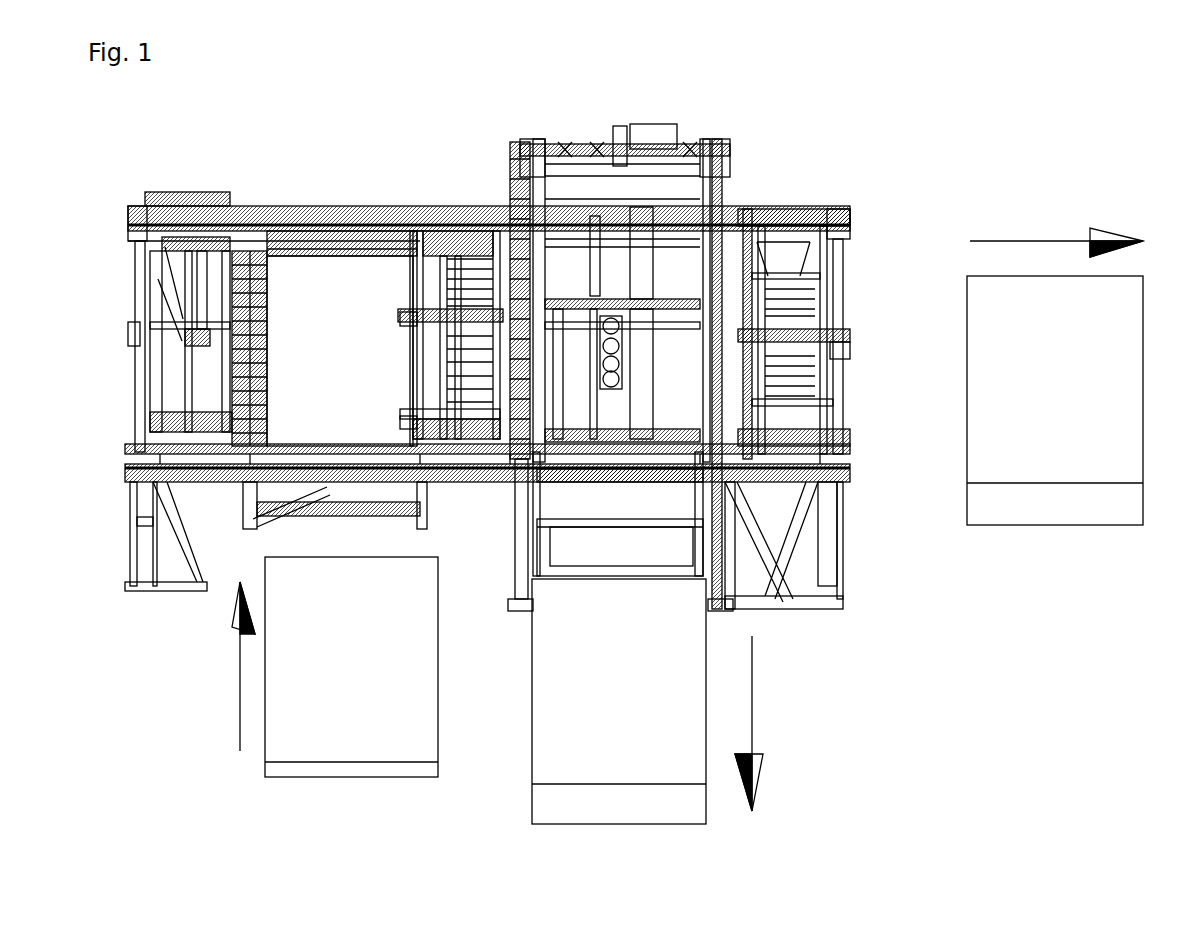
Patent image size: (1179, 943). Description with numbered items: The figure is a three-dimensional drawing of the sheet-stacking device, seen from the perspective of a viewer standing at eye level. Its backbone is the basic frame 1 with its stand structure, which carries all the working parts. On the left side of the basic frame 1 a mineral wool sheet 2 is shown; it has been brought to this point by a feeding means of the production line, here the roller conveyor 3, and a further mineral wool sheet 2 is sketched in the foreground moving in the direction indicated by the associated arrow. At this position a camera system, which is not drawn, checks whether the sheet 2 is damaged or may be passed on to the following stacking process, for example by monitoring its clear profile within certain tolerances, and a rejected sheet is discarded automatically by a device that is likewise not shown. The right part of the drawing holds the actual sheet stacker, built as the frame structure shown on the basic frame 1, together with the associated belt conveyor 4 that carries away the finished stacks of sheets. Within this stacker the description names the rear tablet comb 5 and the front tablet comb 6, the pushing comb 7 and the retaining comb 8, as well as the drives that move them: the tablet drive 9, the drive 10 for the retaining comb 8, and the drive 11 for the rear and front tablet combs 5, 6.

The basic frame 1 is at (822, 482).
The mineral wool sheet 2 is at (331, 300).
The roller conveyor 3 is at (252, 513).
The belt conveyor 4 is at (707, 547).
The rear tablet comb 5 is at (830, 213).
The front tablet comb 6 is at (470, 265).
The pushing comb 7 is at (245, 245).
The retaining comb 8 is at (530, 143).
The tablet drive 9 is at (620, 127).
The drive for retaining comb 10 is at (486, 458).
The drive for tablet combs 11 is at (720, 148).